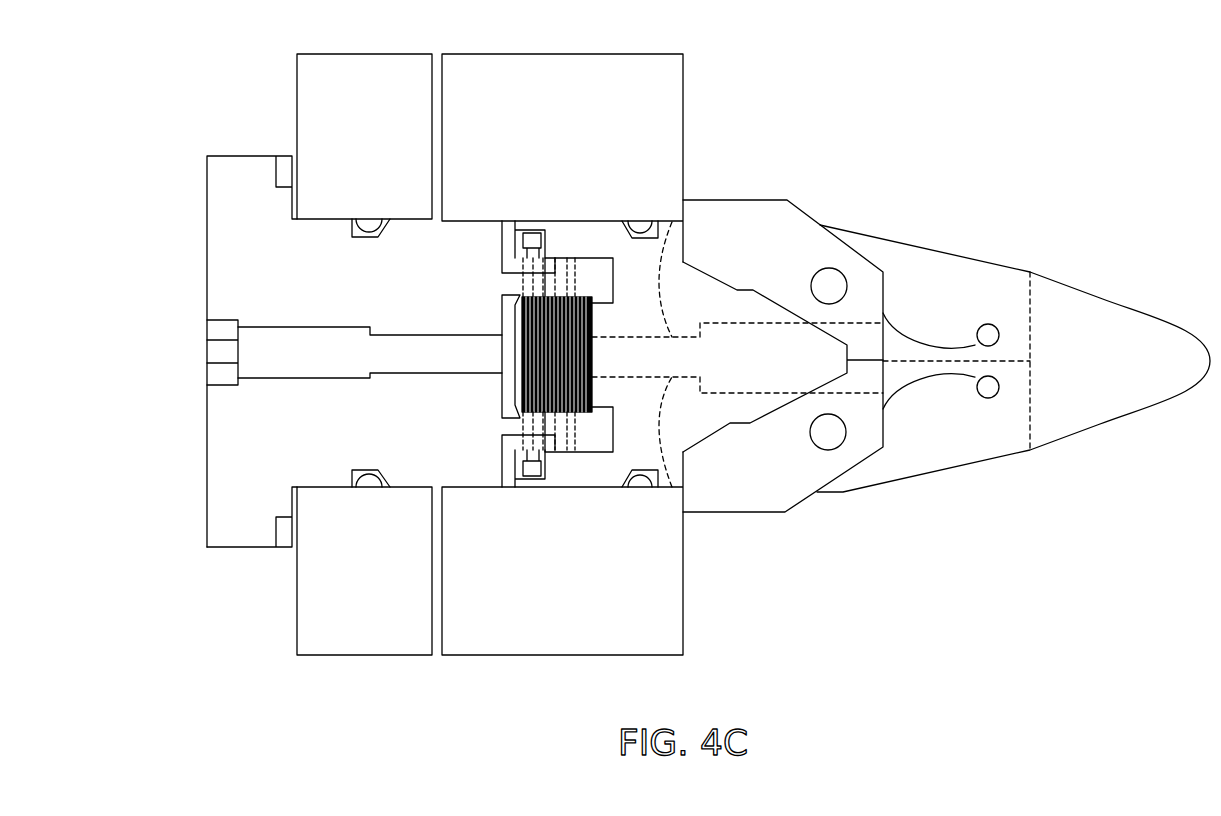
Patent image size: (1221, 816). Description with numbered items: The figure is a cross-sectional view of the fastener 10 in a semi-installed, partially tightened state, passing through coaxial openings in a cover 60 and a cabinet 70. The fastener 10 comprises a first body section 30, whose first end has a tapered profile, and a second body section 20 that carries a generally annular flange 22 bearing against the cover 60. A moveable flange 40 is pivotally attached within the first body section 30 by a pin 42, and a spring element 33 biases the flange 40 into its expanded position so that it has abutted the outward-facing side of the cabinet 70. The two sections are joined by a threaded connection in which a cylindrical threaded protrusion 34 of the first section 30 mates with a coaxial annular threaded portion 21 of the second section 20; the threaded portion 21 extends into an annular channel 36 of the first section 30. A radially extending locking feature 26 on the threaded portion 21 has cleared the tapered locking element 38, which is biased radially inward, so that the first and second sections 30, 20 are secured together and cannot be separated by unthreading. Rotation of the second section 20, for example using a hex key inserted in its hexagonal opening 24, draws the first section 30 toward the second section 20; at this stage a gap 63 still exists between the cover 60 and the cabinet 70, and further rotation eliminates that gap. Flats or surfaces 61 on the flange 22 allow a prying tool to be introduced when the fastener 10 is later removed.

The fastener 10 is at (946, 350).
The second body section 20 is at (233, 247).
The annular threaded portion 21 is at (510, 428).
The annular flange 22 is at (210, 495).
The opening 24 is at (212, 372).
The locking feature 26 is at (558, 447).
The first body section 30 is at (1013, 365).
The spring element 33 is at (985, 325).
The cylindrical protrusion 34 is at (585, 450).
The annular channel 36 is at (592, 267).
The locking element 38 is at (533, 255).
The flange 40 is at (783, 352).
The pin 42 is at (828, 280).
The cover 60 is at (307, 86).
The surfaces 61 is at (282, 540).
The gap 63 is at (435, 658).
The cabinet 70 is at (683, 78).